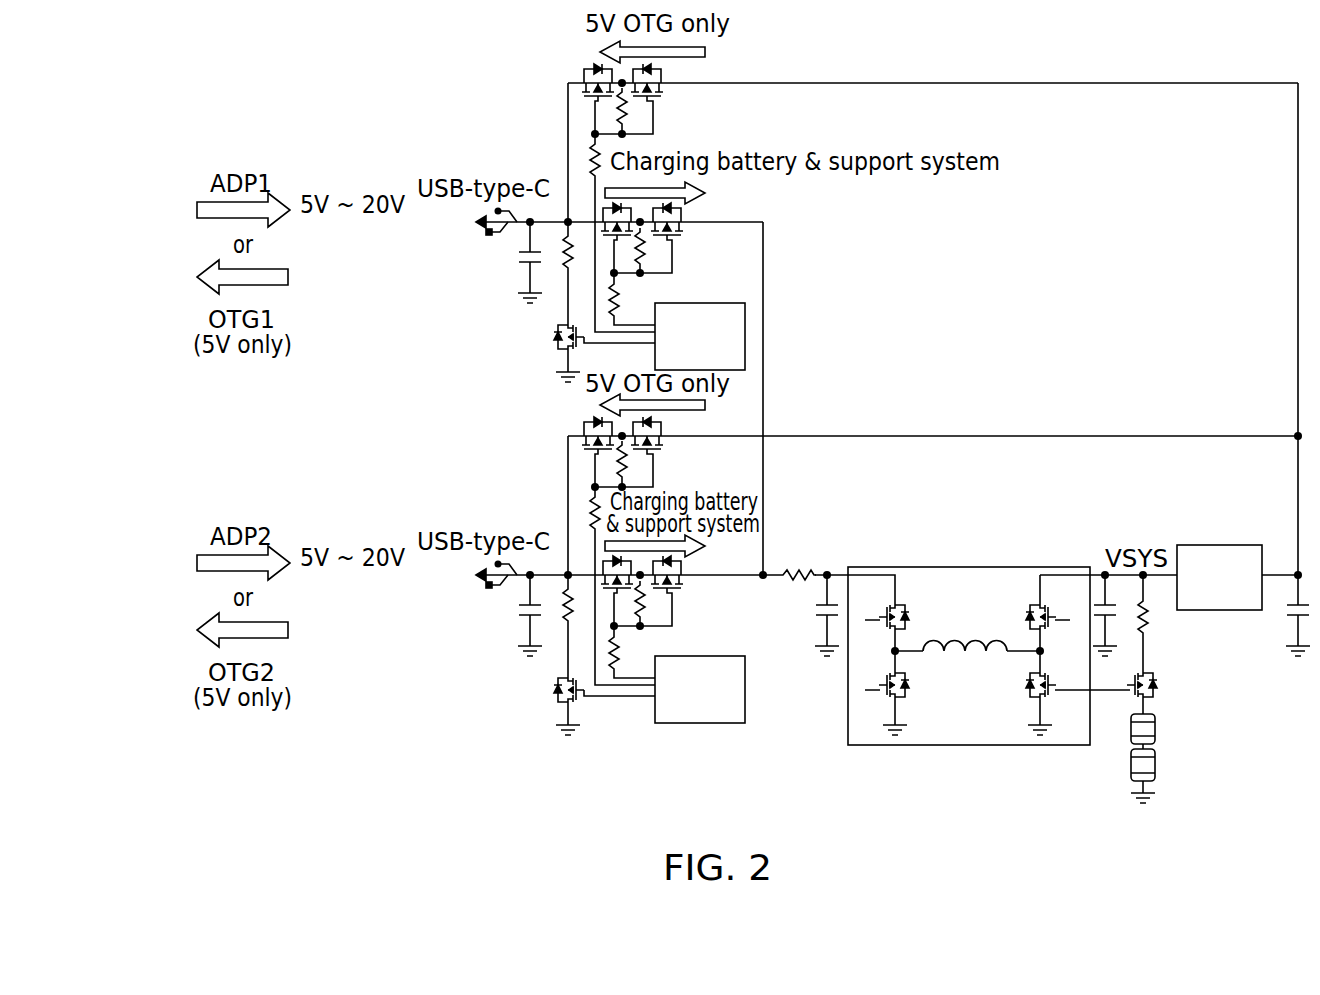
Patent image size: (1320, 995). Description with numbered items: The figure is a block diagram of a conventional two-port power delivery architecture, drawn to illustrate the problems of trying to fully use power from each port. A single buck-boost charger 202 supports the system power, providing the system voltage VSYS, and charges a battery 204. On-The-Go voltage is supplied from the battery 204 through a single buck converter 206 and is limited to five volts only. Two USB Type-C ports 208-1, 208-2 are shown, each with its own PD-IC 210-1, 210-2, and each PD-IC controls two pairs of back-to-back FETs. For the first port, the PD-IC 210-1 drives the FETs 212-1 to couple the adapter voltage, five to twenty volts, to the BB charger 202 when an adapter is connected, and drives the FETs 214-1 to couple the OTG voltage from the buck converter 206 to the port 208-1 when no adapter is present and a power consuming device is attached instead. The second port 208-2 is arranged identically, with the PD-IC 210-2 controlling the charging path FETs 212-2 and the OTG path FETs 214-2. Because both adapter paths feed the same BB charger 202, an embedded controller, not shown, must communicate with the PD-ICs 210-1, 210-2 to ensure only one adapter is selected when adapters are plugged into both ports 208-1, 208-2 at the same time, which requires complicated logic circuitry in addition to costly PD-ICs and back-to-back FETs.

The buck-boost (BB) charger 202 is at (985, 566).
The battery 204 is at (1170, 742).
The buck converter 206 is at (1213, 545).
The first port 208-1 is at (499, 168).
The second port 208-2 is at (615, 525).
The first PD-IC 210-1 is at (745, 337).
The second PD-IC 210-2 is at (705, 736).
The first pair of back-to-back FETs 212-1 is at (712, 240).
The second pair of back-to-back FETs 212-2 is at (693, 593).
The first pair of OTG back-to-back FETs 214-1 is at (666, 112).
The second pair of OTG back-to-back FETs 214-2 is at (668, 454).